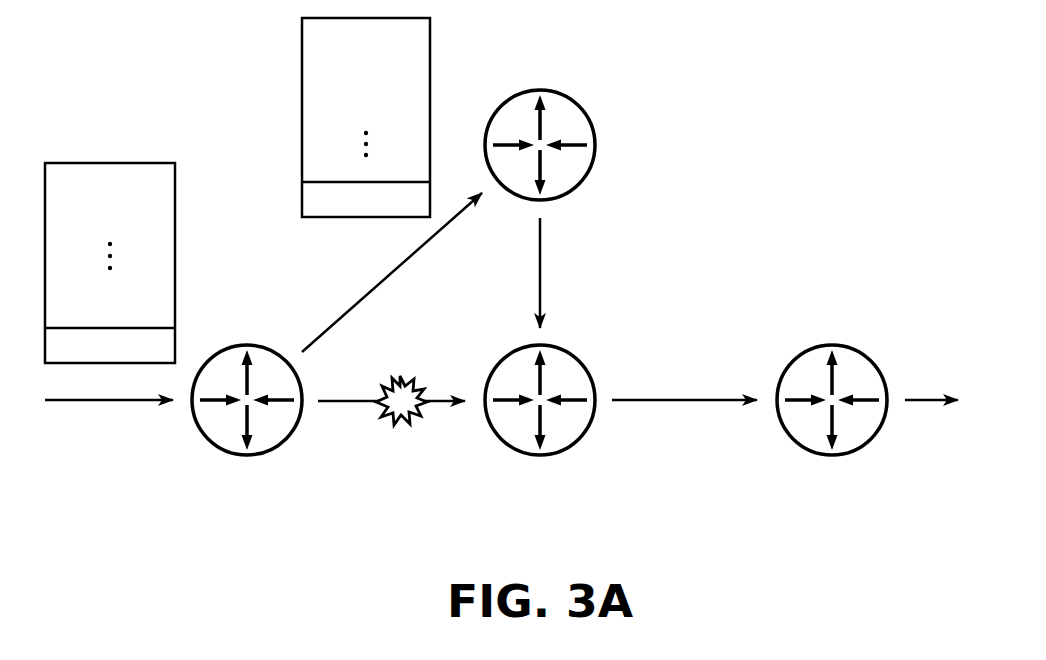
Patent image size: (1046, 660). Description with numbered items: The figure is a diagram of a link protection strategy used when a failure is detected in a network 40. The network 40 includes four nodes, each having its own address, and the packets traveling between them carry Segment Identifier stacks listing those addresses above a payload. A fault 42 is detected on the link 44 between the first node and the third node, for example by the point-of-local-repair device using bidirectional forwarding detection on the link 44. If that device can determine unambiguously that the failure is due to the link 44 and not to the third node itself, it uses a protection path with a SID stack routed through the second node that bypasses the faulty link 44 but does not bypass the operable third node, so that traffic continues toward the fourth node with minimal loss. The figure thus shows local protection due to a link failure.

The network 40 is at (501, 273).
The fault 42 is at (402, 424).
The link 44 is at (352, 403).